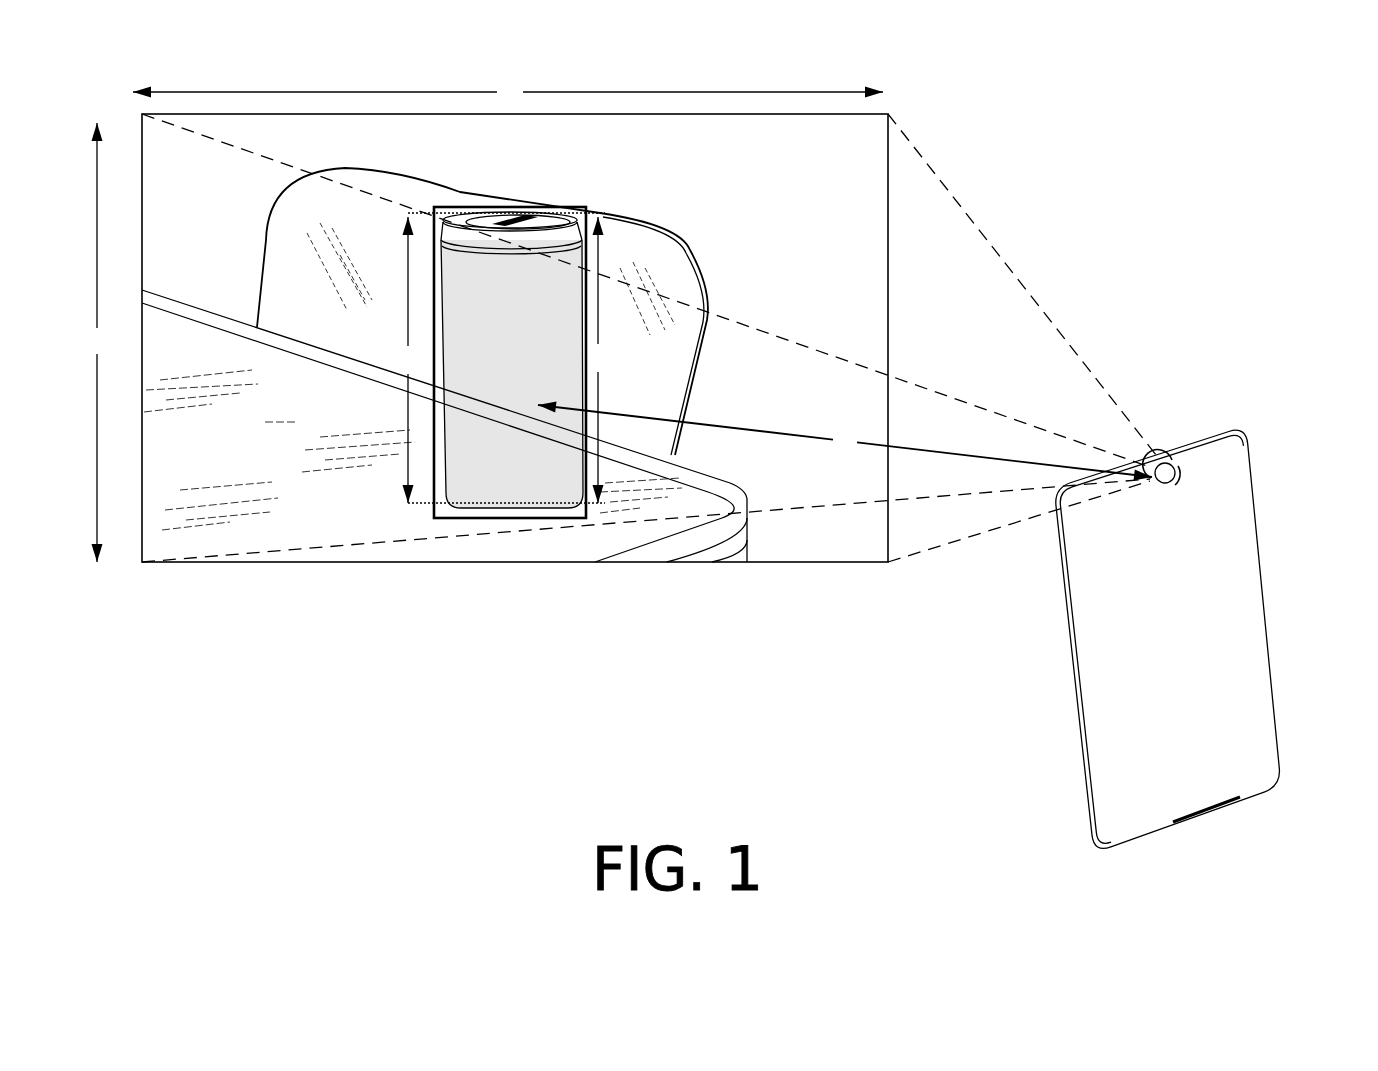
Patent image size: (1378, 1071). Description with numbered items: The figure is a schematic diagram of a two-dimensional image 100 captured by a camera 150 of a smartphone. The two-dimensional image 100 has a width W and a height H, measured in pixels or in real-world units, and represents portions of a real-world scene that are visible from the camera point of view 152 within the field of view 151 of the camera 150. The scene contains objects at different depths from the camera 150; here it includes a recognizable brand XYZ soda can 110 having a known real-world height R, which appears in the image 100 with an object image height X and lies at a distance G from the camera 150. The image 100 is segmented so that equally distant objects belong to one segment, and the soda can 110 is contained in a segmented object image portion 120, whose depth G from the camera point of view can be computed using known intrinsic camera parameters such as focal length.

The two-dimensional image 100 is at (620, 309).
The soda can 110 is at (512, 360).
The segmented object image portion 120 is at (585, 207).
The camera 150 is at (1203, 610).
The field of view 151 is at (1048, 313).
The camera point of view 152 is at (1163, 458).